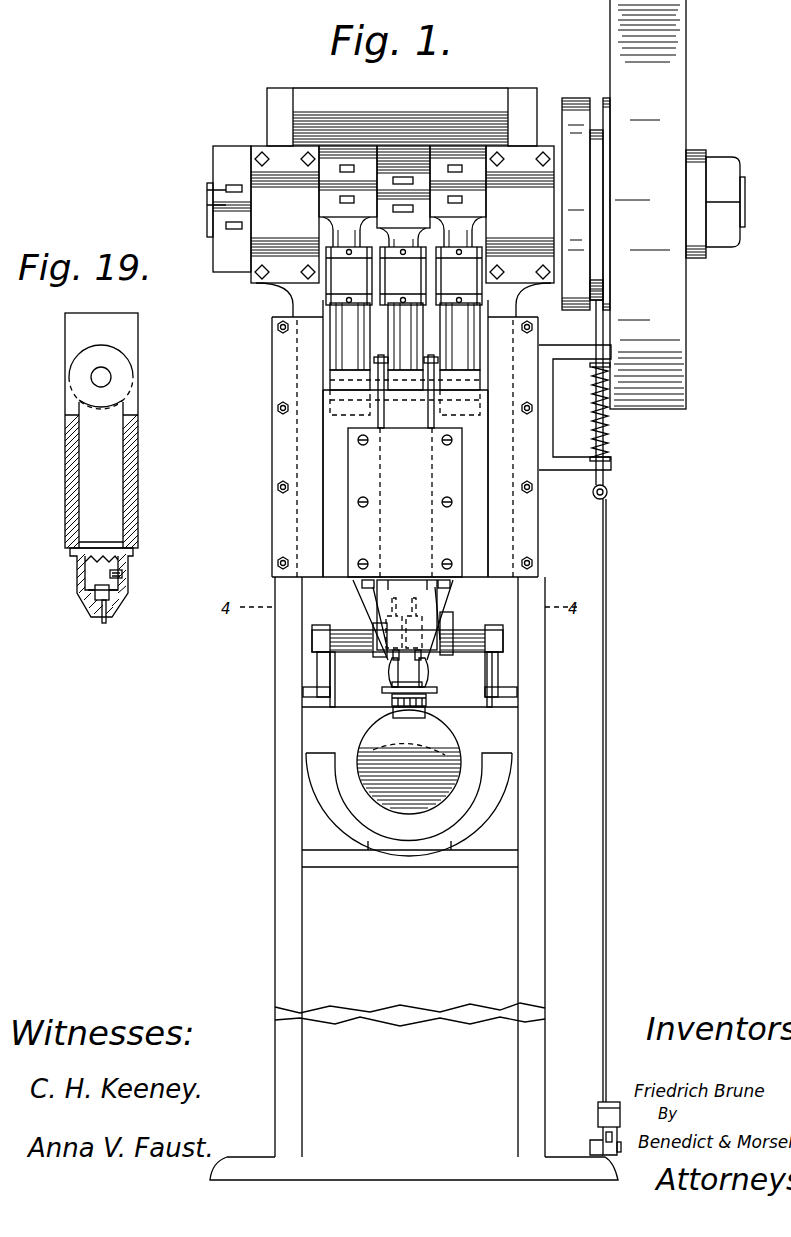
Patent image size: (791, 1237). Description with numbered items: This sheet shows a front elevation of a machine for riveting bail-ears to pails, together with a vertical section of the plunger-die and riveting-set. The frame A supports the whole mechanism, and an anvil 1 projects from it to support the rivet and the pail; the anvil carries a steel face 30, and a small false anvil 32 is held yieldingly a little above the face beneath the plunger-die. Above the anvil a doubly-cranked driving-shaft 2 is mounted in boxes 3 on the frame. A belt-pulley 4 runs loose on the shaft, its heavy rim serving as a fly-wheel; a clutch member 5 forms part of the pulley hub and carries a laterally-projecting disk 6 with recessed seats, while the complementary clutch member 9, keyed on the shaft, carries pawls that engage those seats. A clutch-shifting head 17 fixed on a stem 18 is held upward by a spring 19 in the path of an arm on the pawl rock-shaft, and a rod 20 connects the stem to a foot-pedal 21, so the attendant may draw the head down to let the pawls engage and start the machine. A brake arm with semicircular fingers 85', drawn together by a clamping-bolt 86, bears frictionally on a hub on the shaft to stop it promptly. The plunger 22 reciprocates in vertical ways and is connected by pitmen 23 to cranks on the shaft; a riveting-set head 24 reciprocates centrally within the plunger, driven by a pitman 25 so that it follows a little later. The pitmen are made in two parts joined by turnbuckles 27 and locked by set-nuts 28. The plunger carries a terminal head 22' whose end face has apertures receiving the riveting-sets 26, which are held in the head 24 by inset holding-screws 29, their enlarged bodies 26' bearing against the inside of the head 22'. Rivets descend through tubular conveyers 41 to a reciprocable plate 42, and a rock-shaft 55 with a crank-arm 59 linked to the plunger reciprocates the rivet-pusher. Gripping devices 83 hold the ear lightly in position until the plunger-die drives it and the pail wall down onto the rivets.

In FIG. 1, the anvil 1 is at (420, 745).
In FIG. 1, the doubly-cranked driving-shaft 2 is at (742, 210).
In FIG. 1, the boxes 3 is at (402, 214).
In FIG. 1, the belt-pulley 4 is at (648, 204).
In FIG. 1, the clutch member 5 is at (600, 128).
In FIG. 1, the disk 6 is at (603, 212).
In FIG. 1, the complementary clutch member 9 is at (565, 98).
In FIG. 1, the clutch-shifting head 17 is at (606, 292).
In FIG. 1, the stem 18 is at (605, 481).
In FIG. 1, the spring 19 is at (609, 428).
In FIG. 1, the rod 20 is at (607, 770).
In FIG. 1, the foot-pedal 21 is at (603, 1113).
In FIG. 1, the plunger 22 is at (405, 483).
In FIG. 19, the plunger 22 is at (125, 430).
In FIG. 1, the terminal head 22' is at (368, 594).
In FIG. 19, the terminal head 22' is at (125, 582).
In FIG. 1, the pitmen 23 is at (348, 336).
In FIG. 1, the riveting-set head 24 is at (405, 495).
In FIG. 19, the riveting-set head 24 is at (101, 446).
In FIG. 1, the pitman 25 is at (400, 333).
In FIG. 1, the riveting-sets 26 is at (400, 674).
In FIG. 19, the riveting-sets 26 is at (125, 622).
In FIG. 19, the bodies of the riveting-sets 26' is at (88, 604).
In FIG. 1, the turnbuckles 27 is at (404, 276).
In FIG. 1, the set-nuts 28 is at (424, 255).
In FIG. 19, the holding-screws 29 is at (124, 578).
In FIG. 1, the steel face 30 is at (393, 712).
In FIG. 1, the false anvil 32 is at (426, 700).
In FIG. 1, the tubular conveyers 41 is at (370, 610).
In FIG. 1, the reciprocable plate 42 is at (388, 692).
In FIG. 1, the rock-shaft 55 is at (470, 632).
In FIG. 1, the crank-arm 59 is at (453, 651).
In FIG. 1, the gripping devices 83 is at (432, 690).
In FIG. 1, the fingers 85' is at (232, 209).
In FIG. 1, the clamping-bolt 86 is at (207, 190).
In FIG. 1, the frame A is at (275, 836).